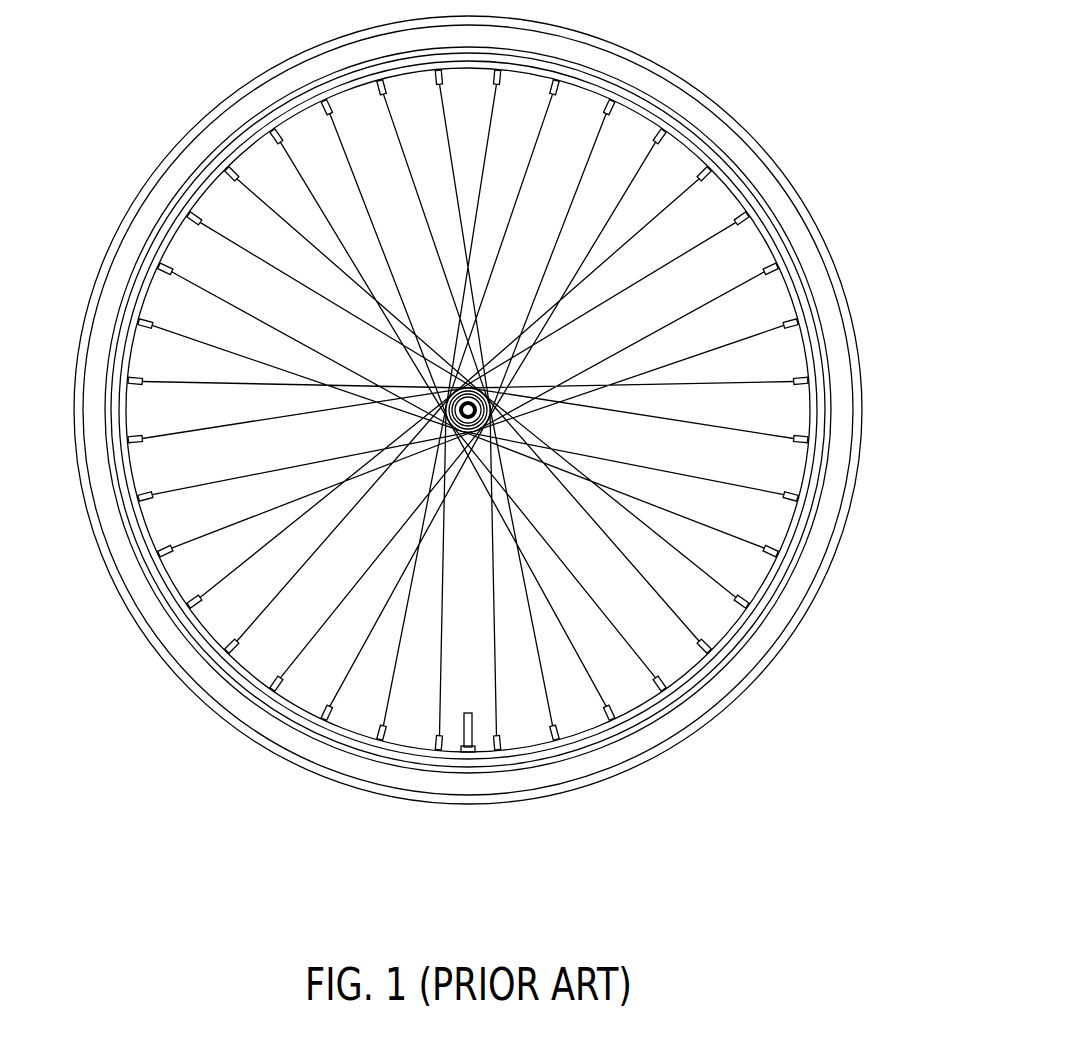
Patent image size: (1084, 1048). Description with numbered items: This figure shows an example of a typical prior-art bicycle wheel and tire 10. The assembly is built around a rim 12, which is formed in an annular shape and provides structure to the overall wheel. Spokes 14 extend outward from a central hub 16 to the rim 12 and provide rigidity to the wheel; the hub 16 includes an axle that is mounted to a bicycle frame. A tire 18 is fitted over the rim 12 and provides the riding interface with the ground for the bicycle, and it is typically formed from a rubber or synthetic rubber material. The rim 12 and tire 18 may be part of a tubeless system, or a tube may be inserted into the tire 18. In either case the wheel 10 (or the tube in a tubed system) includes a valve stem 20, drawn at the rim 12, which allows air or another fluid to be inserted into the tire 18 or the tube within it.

The bicycle wheel and tire 10 is at (108, 657).
The rim 12 is at (775, 568).
The spokes 14 is at (720, 587).
The hub 16 is at (522, 414).
The tire 18 is at (673, 71).
The valve stem 20 is at (463, 724).